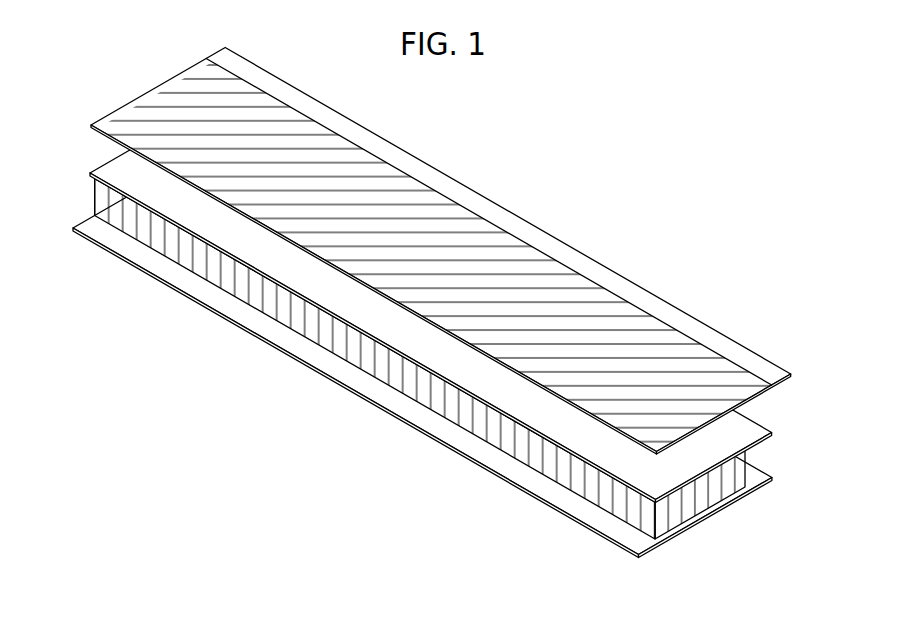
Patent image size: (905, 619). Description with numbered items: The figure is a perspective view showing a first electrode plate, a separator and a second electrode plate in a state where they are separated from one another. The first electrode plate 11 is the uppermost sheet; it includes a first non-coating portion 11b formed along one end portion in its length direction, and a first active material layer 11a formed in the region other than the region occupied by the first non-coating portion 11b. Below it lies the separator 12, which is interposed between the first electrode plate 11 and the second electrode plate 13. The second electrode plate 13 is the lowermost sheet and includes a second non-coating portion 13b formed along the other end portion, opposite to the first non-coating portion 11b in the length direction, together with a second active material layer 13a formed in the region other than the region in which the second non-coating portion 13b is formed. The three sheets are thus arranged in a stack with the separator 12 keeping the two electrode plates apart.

The first electrode plate 11 is at (441, 251).
The first active material layer 11a is at (575, 287).
The first non-coating portion 11b is at (553, 246).
The separator 12 is at (742, 432).
The second electrode plate 13 is at (422, 350).
The second active material layer 13a is at (558, 480).
The second non-coating portion 13b is at (578, 513).